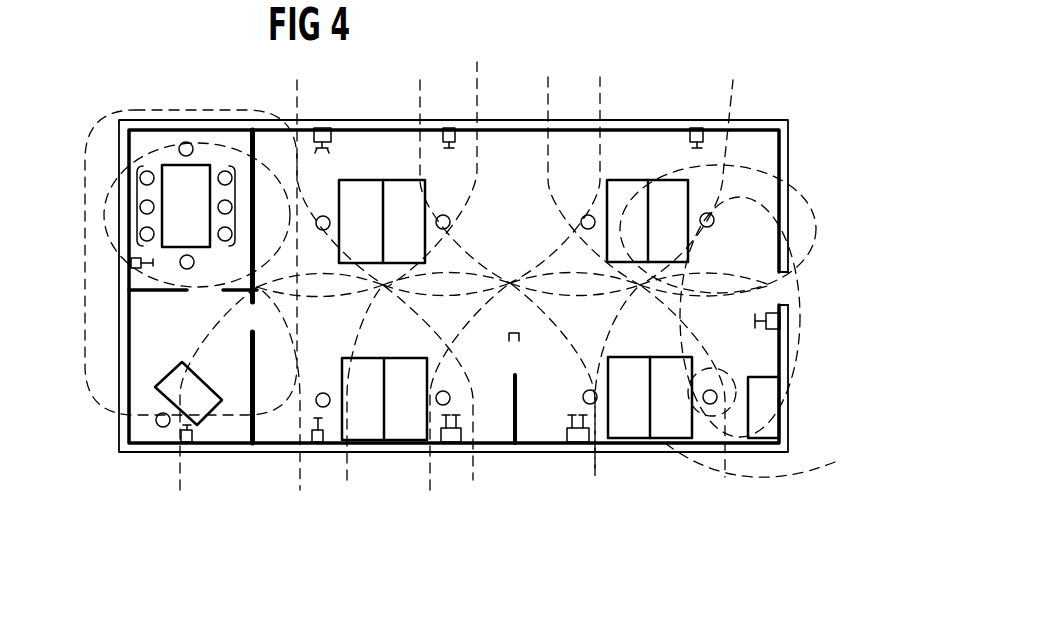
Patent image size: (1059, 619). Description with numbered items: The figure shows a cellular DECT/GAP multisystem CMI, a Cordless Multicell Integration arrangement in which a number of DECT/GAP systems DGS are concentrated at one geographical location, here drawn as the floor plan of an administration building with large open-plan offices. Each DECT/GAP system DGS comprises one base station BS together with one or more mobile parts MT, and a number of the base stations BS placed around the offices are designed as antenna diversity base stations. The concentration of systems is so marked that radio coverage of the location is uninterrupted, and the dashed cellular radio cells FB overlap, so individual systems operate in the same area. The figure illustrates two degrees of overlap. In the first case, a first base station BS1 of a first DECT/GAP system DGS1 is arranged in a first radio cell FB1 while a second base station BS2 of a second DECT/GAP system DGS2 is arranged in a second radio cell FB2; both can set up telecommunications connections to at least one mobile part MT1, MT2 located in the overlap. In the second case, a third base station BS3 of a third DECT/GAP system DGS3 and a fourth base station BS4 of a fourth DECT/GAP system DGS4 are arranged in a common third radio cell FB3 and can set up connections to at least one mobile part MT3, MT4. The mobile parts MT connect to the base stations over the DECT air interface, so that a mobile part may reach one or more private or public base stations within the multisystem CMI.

The cellular DECT/GAP multisystem CMI is at (500, 104).
The mobile part MT is at (484, 290).
The mobile part MT1 is at (712, 226).
The mobile part MT2 is at (711, 390).
The mobile part MT3 is at (447, 393).
The mobile part MT4 is at (588, 392).
The base station BS is at (508, 301).
The first base station BS1 is at (697, 125).
The second base station BS2 is at (782, 338).
The third base station BS3 is at (575, 440).
The fourth base station BS4 is at (449, 444).
The radio cell FB is at (482, 279).
The first radio cell FB1 is at (800, 242).
The second radio cell FB2 is at (806, 470).
The third radio cell FB3 is at (716, 482).
The DECT/GAP system DGS is at (467, 298).
The first DECT/GAP system DGS1 is at (562, 90).
The second DECT/GAP system DGS2 is at (748, 135).
The third DECT/GAP system DGS3 is at (742, 498).
The fourth DECT/GAP system DGS4 is at (607, 478).